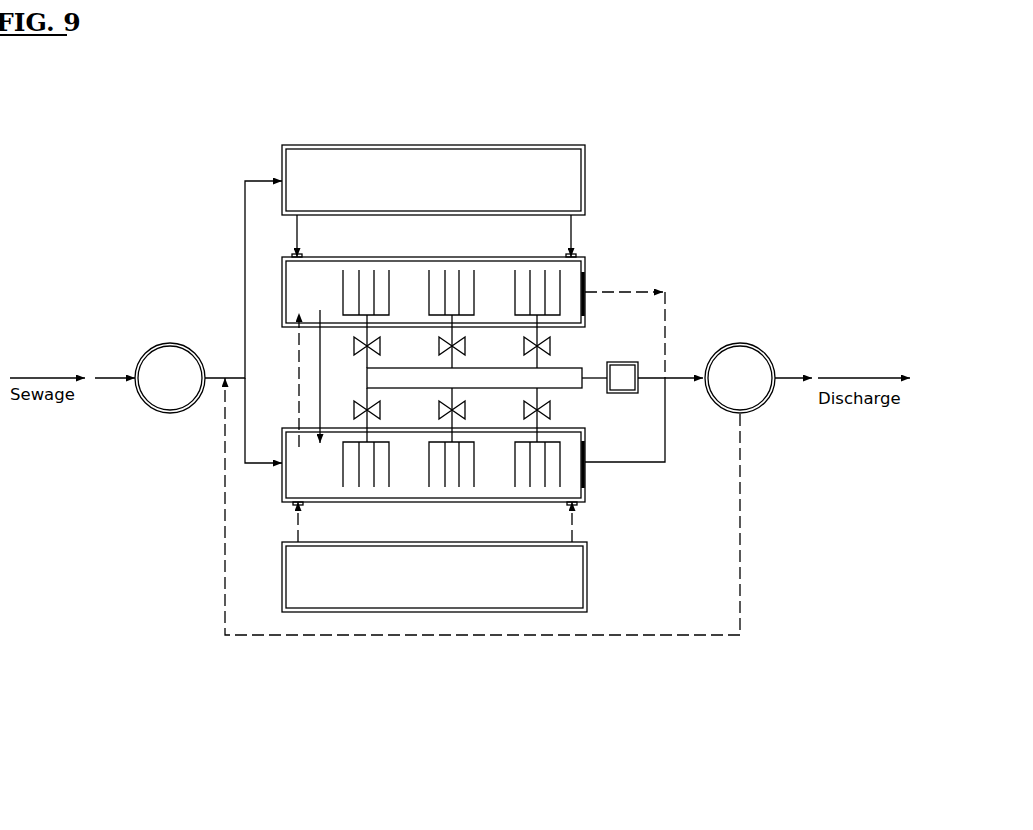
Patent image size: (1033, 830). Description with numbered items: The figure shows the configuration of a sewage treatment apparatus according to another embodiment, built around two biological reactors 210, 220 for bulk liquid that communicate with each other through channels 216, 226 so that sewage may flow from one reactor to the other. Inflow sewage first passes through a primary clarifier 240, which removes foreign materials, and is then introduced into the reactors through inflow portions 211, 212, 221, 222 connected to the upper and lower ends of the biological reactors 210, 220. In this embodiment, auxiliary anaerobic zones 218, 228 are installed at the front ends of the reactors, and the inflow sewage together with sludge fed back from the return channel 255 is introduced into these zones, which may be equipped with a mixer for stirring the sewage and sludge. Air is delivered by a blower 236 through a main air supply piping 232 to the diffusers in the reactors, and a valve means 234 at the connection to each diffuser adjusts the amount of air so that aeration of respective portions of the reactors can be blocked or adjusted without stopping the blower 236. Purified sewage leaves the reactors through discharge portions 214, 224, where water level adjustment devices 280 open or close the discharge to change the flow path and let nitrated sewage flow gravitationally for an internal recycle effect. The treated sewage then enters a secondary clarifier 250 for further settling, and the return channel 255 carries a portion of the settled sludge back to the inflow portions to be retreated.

The biological reactor 210 is at (282, 485).
The inflow portion 211 is at (298, 520).
The inflow portion 212 is at (572, 517).
The discharge portion 214 is at (665, 457).
The channel 216 is at (300, 407).
The auxiliary anaerobic zone 218 is at (587, 573).
The biological reactor 220 is at (282, 280).
The inflow portion 221 is at (297, 238).
The inflow portion 222 is at (571, 235).
The discharge portion 224 is at (650, 288).
The channel 226 is at (320, 360).
The auxiliary anaerobic zone 228 is at (585, 178).
The main air supply piping 232 is at (575, 389).
The valve means 234 is at (556, 410).
The blower 236 is at (622, 362).
The primary clarifier 240 is at (170, 343).
The secondary clarifier 250 is at (740, 343).
The return channel 255 is at (741, 573).
The water level adjustment device 280 is at (584, 281).